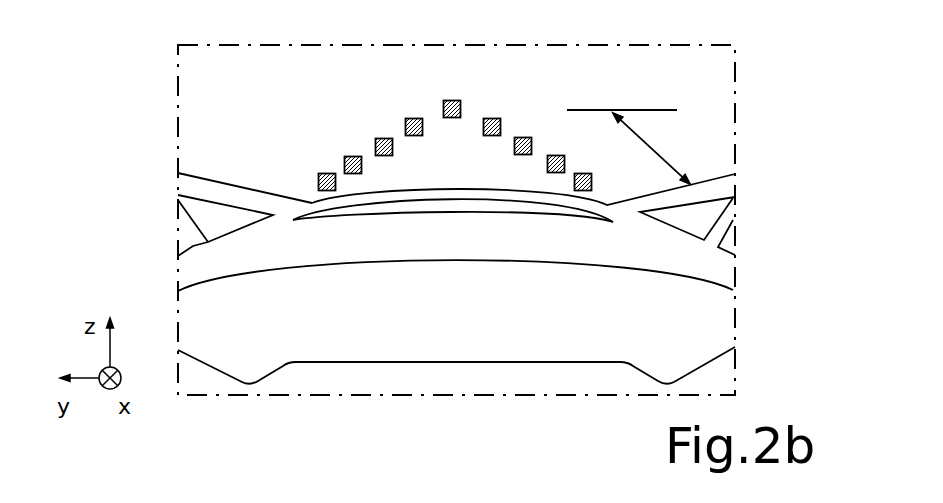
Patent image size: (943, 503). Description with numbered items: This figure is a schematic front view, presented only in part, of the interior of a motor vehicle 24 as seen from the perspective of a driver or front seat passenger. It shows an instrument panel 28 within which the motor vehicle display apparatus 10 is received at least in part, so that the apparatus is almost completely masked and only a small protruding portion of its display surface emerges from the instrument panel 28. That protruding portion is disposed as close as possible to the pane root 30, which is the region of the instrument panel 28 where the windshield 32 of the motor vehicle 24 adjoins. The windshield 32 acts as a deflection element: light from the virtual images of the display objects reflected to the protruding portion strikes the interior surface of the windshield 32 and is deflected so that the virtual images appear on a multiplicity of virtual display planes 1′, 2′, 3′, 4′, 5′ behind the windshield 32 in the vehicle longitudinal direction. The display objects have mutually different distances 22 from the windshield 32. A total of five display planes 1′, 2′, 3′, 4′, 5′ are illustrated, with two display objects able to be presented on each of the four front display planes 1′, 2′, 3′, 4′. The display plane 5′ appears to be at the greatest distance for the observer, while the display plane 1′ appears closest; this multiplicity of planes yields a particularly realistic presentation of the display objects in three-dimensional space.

The motor vehicle display apparatus 10 is at (560, 210).
The distances 22 is at (653, 143).
The motor vehicle 24 is at (386, 408).
The instrument panel 28 is at (252, 257).
The pane root 30 is at (312, 204).
The windshield 32 is at (352, 80).
The virtual display plane 1′ is at (325, 173).
The virtual display plane 2′ is at (351, 157).
The virtual display plane 3′ is at (383, 139).
The virtual display plane 4′ is at (412, 119).
The virtual display plane 5′ is at (450, 101).